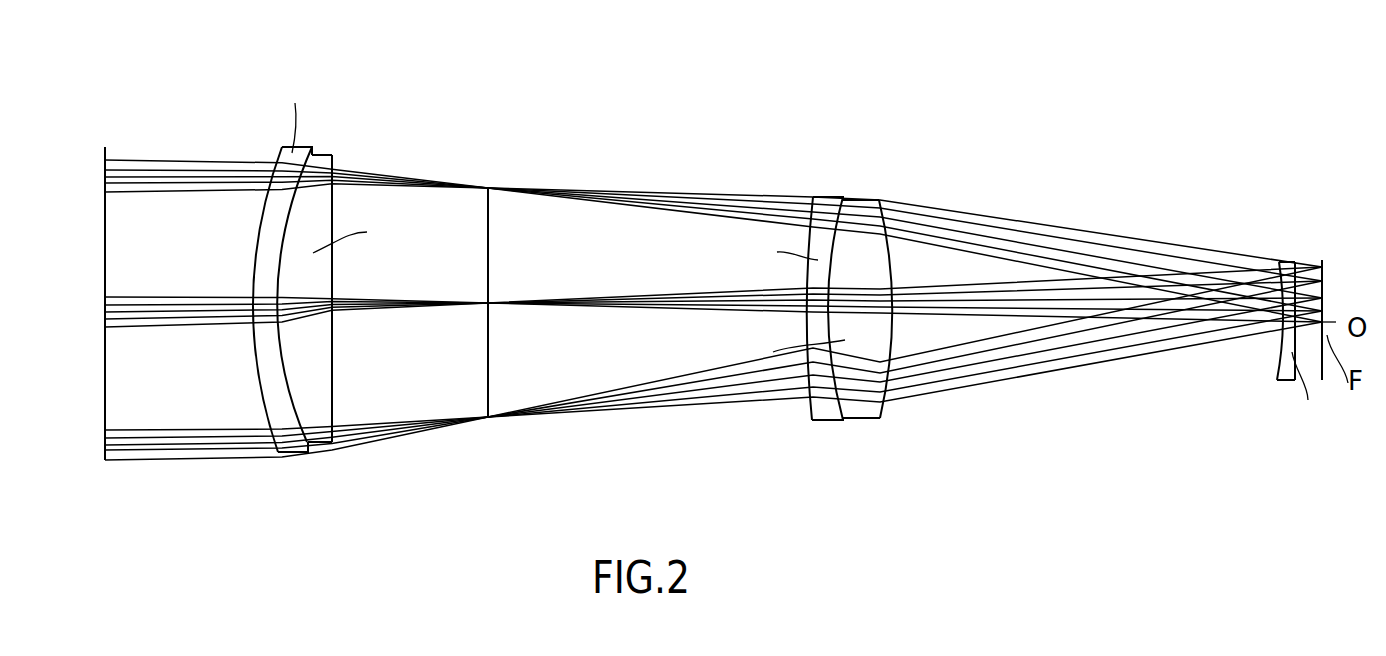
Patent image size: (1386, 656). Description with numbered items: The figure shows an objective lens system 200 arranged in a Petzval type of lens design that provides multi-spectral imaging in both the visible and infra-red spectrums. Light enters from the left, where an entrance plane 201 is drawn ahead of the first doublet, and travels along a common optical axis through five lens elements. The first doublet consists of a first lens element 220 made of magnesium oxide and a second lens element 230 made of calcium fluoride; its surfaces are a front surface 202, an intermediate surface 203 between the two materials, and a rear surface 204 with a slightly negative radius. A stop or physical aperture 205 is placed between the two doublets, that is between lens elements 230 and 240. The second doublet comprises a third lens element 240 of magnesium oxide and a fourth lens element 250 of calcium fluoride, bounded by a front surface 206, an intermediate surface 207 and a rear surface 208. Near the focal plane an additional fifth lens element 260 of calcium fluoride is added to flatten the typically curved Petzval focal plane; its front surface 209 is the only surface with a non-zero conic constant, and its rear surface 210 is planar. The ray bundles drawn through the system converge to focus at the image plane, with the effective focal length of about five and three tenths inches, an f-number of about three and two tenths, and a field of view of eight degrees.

The objective lens system 200 is at (1318, 138).
The object plane 201 is at (102, 458).
The surface 202 is at (278, 151).
The surface 203 is at (305, 151).
The surface 204 is at (336, 158).
The stop or physical aperture 205 is at (489, 188).
The surface 206 is at (808, 233).
The surface 207 is at (842, 212).
The surface 208 is at (883, 220).
The surface 209 is at (1278, 262).
The surface 210 is at (1305, 267).
The first lens element 220 is at (295, 296).
The second lens element 230 is at (371, 311).
The third lens element 240 is at (804, 302).
The fourth lens element 250 is at (842, 314).
The fifth lens element 260 is at (1274, 311).